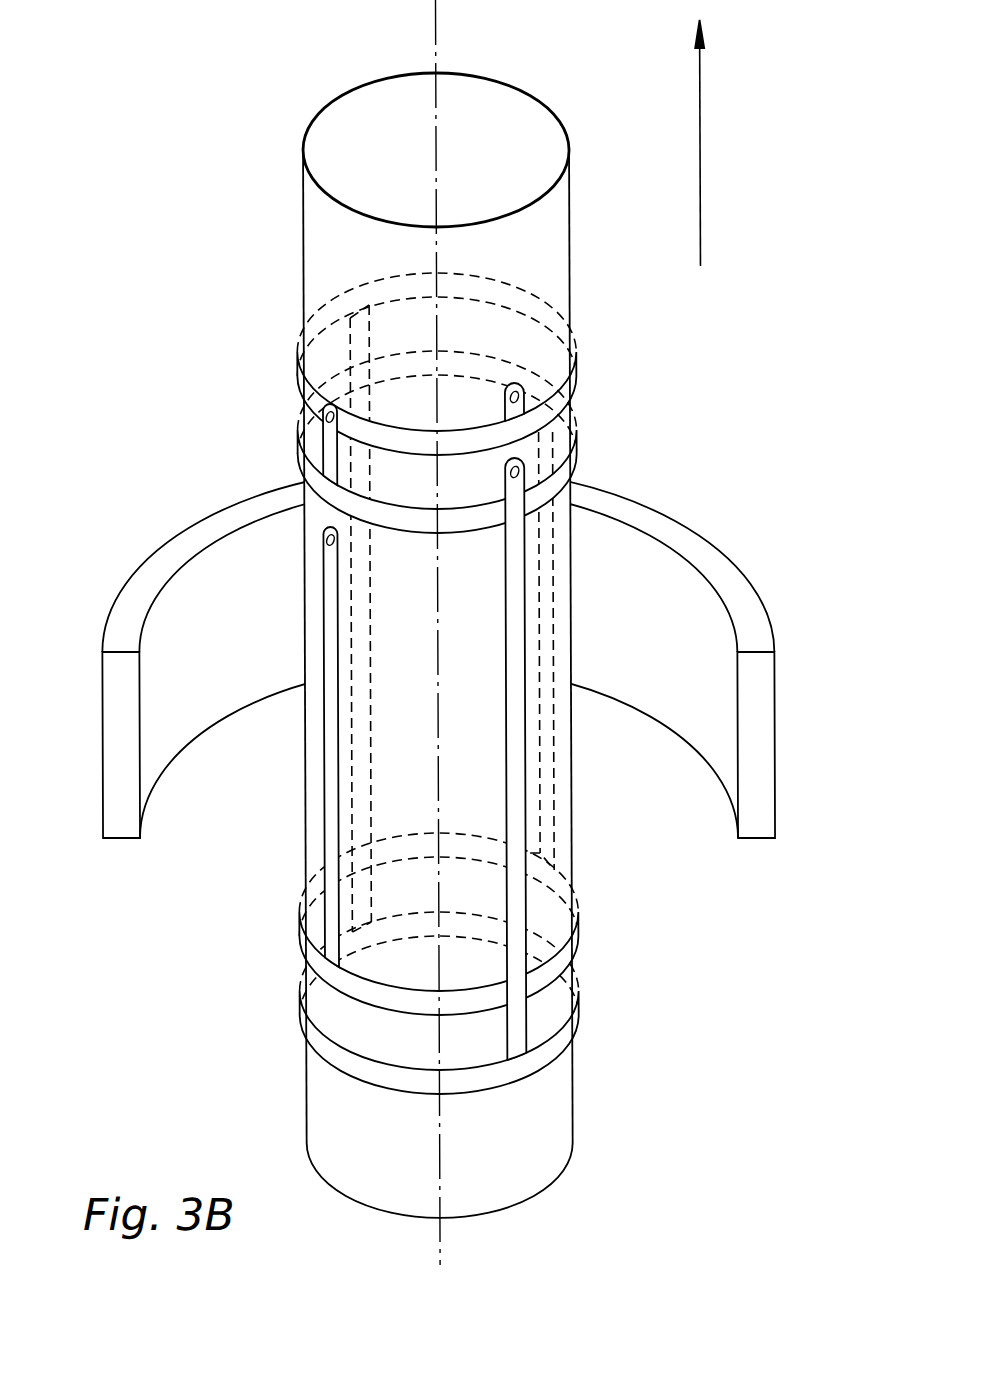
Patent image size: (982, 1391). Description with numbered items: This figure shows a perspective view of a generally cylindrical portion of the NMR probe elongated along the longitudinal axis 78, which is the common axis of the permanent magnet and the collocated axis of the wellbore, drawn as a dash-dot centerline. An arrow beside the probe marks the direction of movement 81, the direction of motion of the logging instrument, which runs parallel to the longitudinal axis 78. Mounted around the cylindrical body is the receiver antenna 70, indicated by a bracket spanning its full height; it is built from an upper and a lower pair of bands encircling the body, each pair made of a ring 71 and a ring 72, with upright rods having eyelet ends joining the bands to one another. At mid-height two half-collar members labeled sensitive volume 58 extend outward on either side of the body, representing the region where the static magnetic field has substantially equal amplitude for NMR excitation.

The sensitive volume 58 is at (100, 726).
The receiver antenna 70 is at (430, 682).
The inner ring 71 is at (575, 452).
The outer ring 72 is at (575, 355).
The longitudinal axis 78 is at (436, 13).
The direction of movement 81 is at (700, 147).